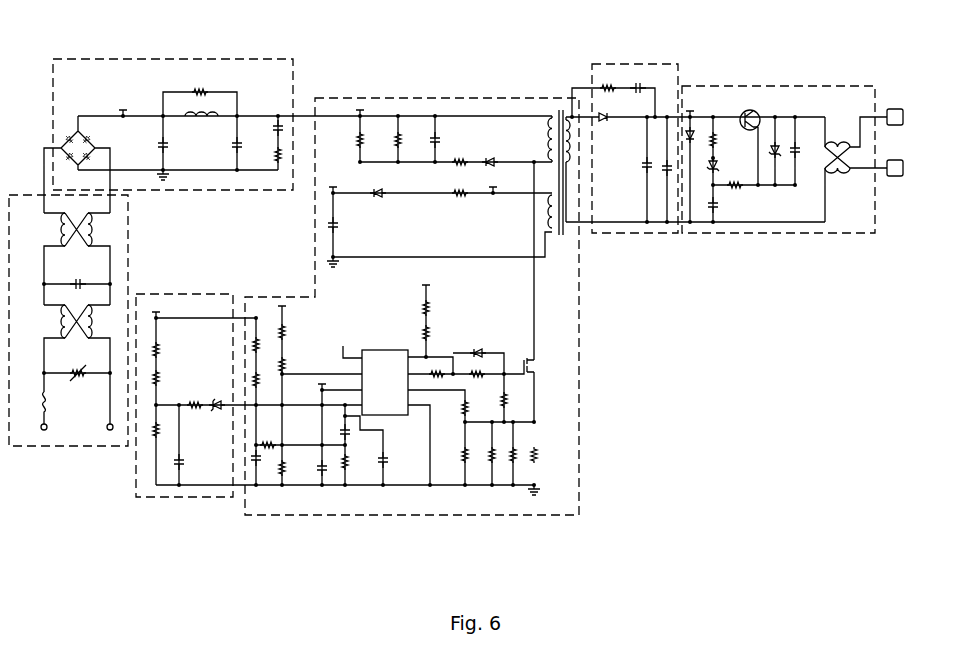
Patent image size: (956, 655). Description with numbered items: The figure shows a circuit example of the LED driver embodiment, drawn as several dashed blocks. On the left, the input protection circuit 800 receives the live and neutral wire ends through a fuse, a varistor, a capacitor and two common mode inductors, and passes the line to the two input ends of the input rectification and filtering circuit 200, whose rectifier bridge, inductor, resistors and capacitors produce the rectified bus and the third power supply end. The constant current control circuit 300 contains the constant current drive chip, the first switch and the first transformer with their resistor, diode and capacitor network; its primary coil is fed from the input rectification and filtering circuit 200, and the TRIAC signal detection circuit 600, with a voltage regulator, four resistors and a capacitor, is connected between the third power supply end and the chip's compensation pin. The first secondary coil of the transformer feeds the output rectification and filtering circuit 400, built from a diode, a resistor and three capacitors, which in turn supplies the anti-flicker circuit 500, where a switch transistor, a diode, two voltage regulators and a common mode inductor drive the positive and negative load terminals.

The input rectification and filtering circuit 200 is at (163, 59).
The constant current control circuit 300 is at (393, 98).
The output rectification and filtering circuit 400 is at (623, 64).
The anti-flicker circuit 500 is at (750, 86).
The TRIAC signal detection circuit 600 is at (170, 294).
The input protection circuit 800 is at (128, 245).